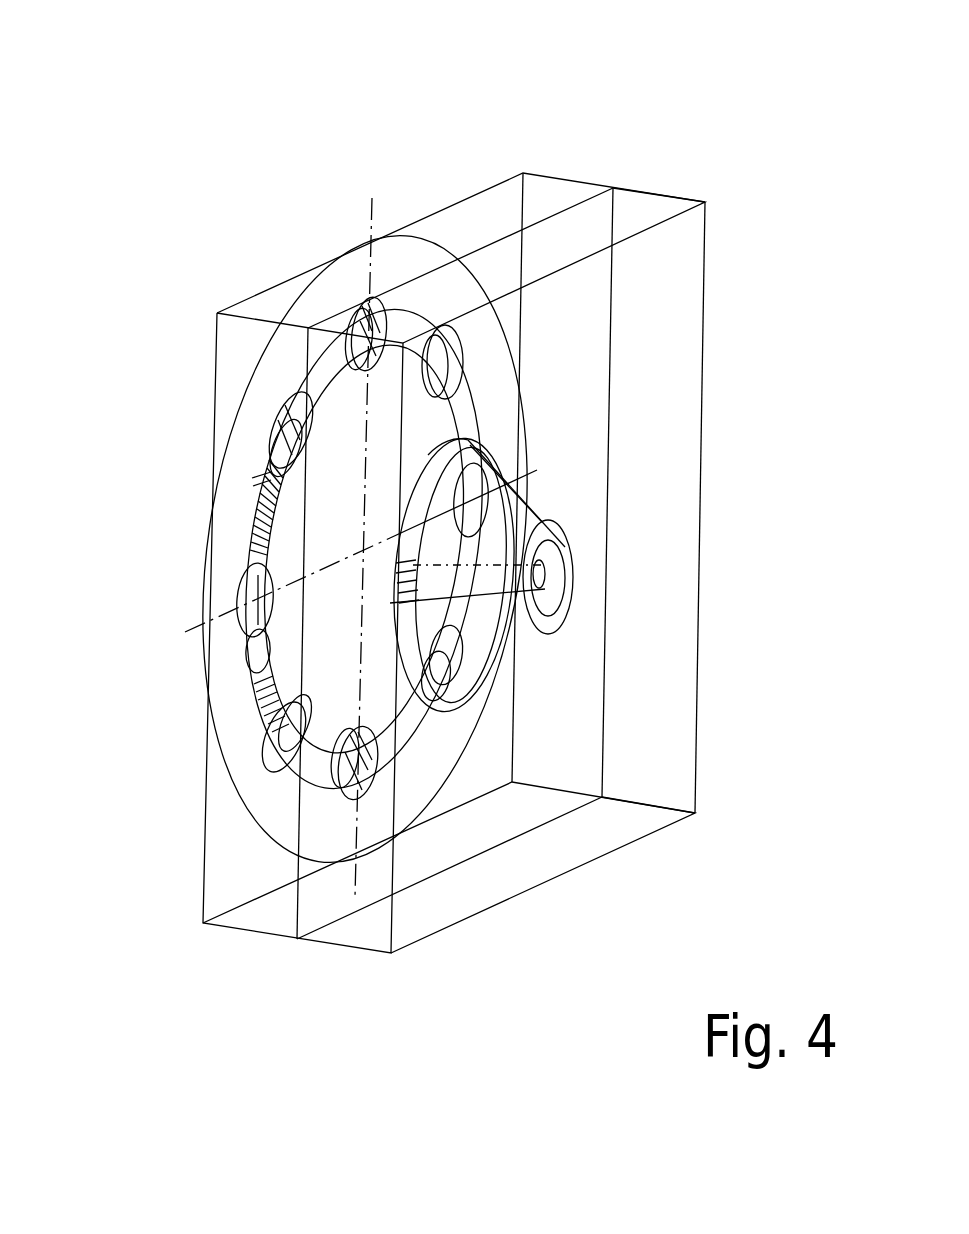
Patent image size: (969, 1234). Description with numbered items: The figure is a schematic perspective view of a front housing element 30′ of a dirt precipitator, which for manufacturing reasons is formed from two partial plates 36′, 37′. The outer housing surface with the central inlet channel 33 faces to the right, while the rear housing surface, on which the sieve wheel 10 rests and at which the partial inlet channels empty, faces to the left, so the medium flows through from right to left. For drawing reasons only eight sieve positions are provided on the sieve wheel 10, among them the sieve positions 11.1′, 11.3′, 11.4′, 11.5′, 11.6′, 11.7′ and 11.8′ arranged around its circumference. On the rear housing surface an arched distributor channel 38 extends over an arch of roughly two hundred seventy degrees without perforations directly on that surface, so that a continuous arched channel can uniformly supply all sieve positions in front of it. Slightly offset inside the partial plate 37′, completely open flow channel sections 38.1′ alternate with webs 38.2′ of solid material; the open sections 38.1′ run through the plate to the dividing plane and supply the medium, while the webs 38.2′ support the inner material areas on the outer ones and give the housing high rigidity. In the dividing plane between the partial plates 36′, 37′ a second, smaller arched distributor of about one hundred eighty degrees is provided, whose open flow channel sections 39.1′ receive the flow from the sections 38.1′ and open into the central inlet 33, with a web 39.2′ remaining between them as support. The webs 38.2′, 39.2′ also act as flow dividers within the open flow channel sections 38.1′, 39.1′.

The front housing element 30′ is at (763, 159).
The partial plate 36′ is at (644, 191).
The partial plate 37′ is at (568, 181).
The arched distributor channel 38 is at (318, 326).
The open flow channel section 38.1′ is at (255, 548).
The web 38.2′ is at (262, 483).
The sieve wheel 10 is at (260, 795).
The sieve position 11.1′ is at (447, 350).
The sieve position 11.3′ is at (437, 690).
The sieve position 11.4′ is at (352, 800).
The sieve position 11.5′ is at (275, 758).
The sieve position 11.6′ is at (245, 602).
The sieve position 11.7′ is at (273, 420).
The sieve position 11.8′ is at (366, 305).
The open flow channel section 39.1′ is at (470, 440).
The web 39.2′ is at (470, 562).
The central inlet channel 33 is at (553, 577).